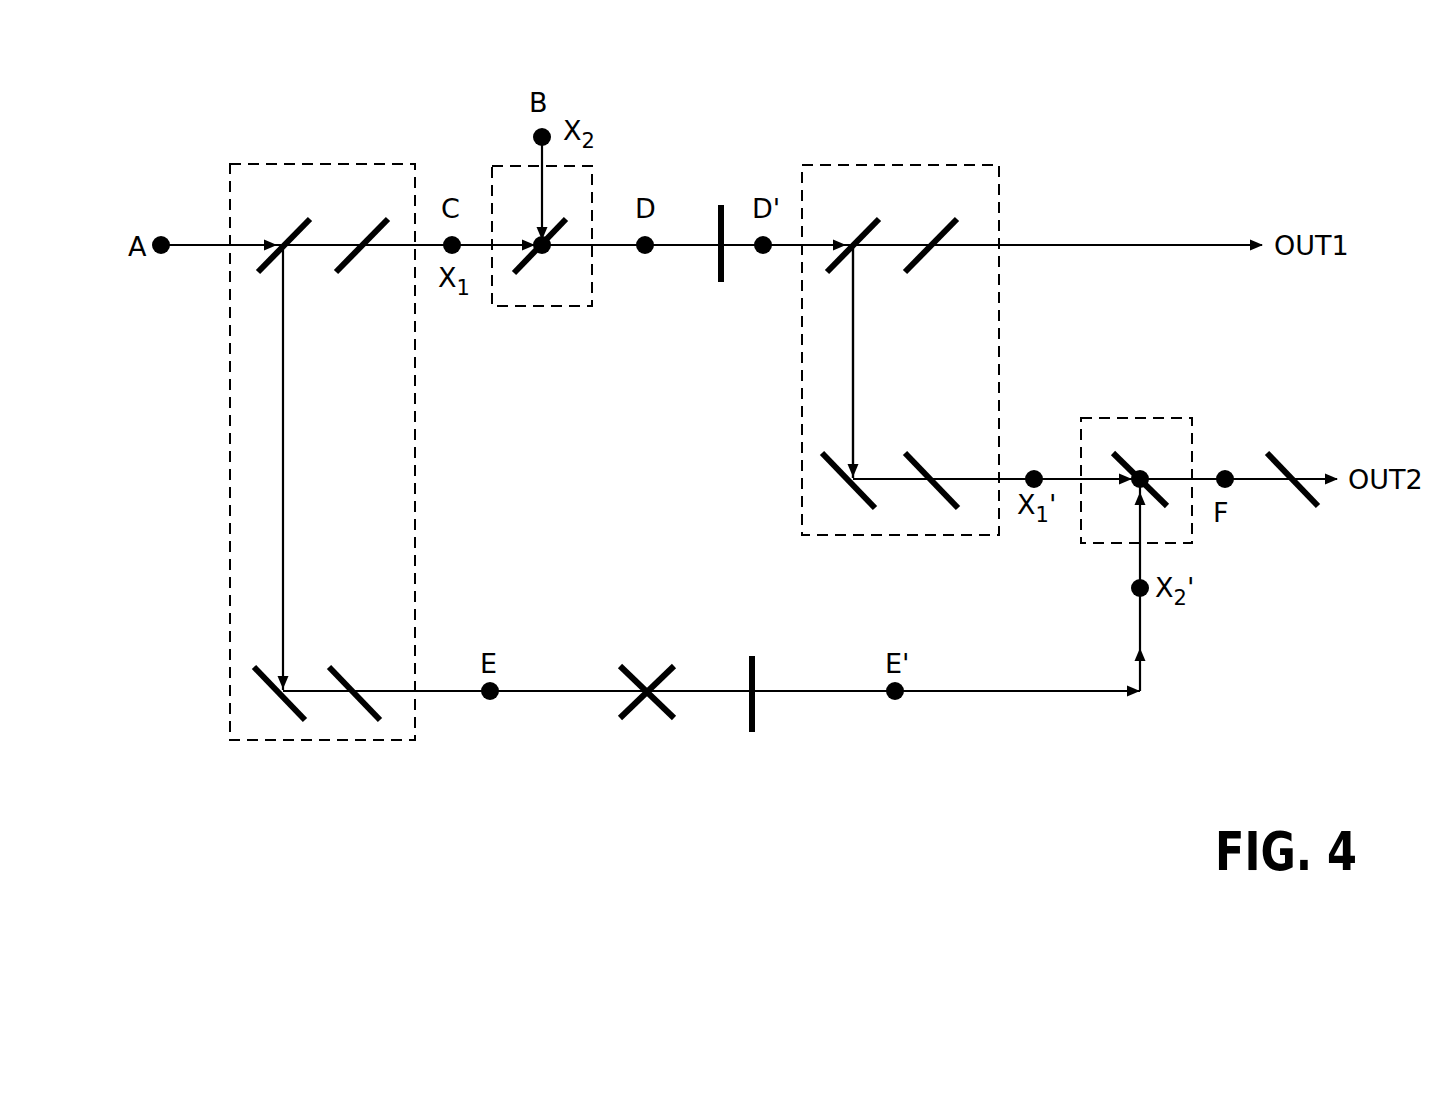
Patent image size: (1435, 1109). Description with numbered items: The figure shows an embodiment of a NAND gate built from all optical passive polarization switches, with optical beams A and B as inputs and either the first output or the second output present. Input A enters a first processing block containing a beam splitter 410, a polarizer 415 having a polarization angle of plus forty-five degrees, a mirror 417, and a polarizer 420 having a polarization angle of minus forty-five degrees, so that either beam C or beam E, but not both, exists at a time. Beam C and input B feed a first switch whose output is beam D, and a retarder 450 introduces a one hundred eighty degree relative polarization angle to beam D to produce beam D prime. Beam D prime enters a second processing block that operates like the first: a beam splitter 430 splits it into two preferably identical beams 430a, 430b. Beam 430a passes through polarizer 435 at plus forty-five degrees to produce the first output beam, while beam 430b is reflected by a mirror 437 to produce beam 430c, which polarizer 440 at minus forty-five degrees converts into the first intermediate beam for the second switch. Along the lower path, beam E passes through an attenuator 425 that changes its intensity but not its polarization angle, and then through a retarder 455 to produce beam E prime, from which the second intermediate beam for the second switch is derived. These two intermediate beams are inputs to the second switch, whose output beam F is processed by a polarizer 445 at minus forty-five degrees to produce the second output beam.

The beam splitter 410 is at (305, 212).
The polarizer 415 is at (385, 212).
The mirror 417 is at (254, 684).
The polarizer 420 is at (367, 720).
The retarder 450 is at (721, 200).
The beam splitter 430 is at (878, 212).
The beam 430a is at (866, 250).
The beam 430b is at (855, 322).
The beam 430c is at (877, 480).
The polarizer 435 is at (957, 212).
The mirror 437 is at (850, 503).
The polarizer 440 is at (932, 503).
The polarizer 445 is at (1294, 463).
The attenuator 425 is at (656, 717).
The retarder 455 is at (764, 710).